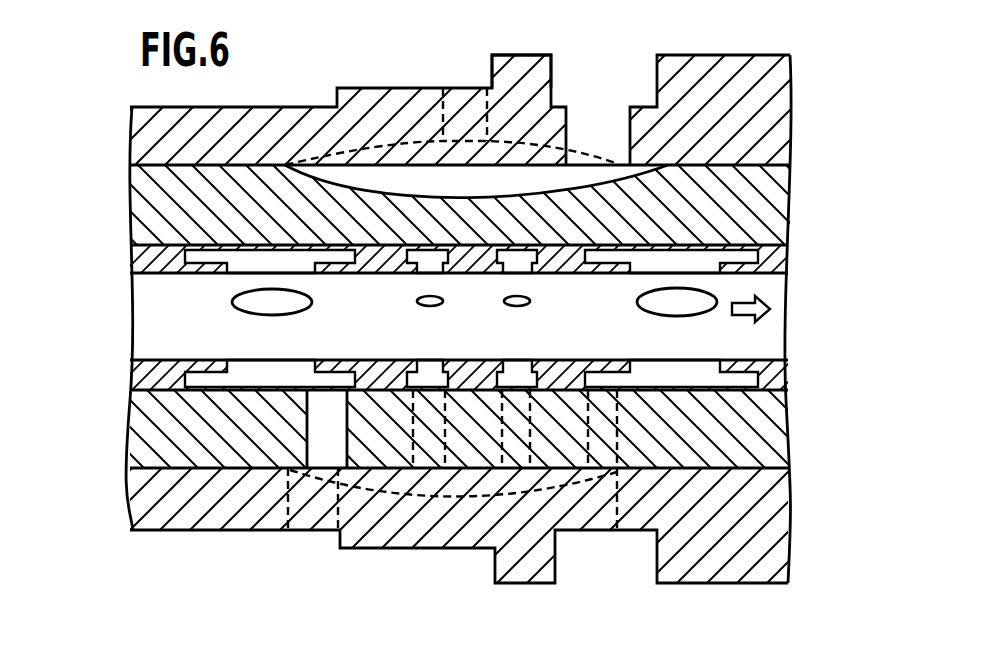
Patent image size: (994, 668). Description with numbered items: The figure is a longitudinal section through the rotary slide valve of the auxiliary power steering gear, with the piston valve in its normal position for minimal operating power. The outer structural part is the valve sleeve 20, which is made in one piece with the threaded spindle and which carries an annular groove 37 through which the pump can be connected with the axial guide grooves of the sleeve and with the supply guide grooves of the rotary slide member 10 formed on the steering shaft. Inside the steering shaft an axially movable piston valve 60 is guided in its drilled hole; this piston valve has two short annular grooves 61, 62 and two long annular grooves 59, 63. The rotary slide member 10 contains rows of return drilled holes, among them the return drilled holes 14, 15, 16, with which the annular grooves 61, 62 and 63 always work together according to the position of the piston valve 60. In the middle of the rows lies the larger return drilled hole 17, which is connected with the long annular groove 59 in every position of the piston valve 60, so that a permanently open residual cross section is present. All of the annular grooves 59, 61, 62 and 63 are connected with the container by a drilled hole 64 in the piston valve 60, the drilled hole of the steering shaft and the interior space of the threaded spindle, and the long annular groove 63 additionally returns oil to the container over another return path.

The rotary slide member 10 is at (737, 210).
The valve sleeve 20 is at (747, 108).
The annular groove 37 is at (553, 86).
The piston valve 60 is at (750, 332).
The short annular groove 61 is at (417, 258).
The short annular groove 62 is at (520, 254).
The long annular groove 63 is at (731, 256).
The drilled hole 64 is at (173, 278).
The long annular groove 59 is at (233, 383).
The return drilled hole 17 is at (332, 433).
The return drilled hole 14 is at (432, 448).
The return drilled hole 15 is at (518, 443).
The return drilled hole 16 is at (612, 535).